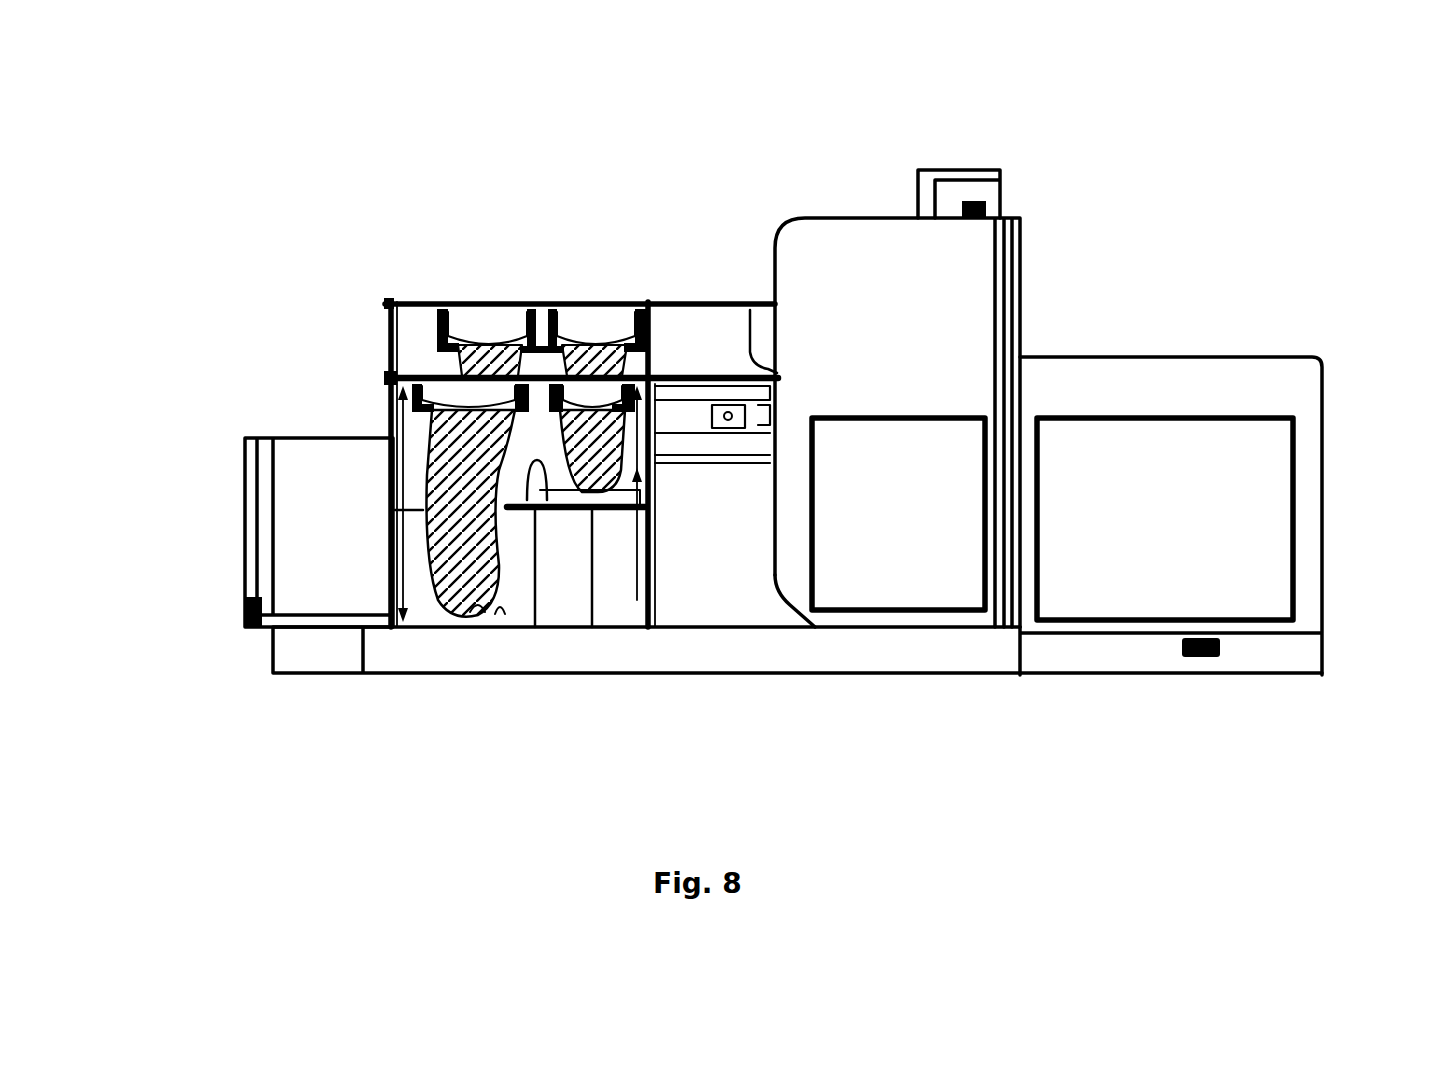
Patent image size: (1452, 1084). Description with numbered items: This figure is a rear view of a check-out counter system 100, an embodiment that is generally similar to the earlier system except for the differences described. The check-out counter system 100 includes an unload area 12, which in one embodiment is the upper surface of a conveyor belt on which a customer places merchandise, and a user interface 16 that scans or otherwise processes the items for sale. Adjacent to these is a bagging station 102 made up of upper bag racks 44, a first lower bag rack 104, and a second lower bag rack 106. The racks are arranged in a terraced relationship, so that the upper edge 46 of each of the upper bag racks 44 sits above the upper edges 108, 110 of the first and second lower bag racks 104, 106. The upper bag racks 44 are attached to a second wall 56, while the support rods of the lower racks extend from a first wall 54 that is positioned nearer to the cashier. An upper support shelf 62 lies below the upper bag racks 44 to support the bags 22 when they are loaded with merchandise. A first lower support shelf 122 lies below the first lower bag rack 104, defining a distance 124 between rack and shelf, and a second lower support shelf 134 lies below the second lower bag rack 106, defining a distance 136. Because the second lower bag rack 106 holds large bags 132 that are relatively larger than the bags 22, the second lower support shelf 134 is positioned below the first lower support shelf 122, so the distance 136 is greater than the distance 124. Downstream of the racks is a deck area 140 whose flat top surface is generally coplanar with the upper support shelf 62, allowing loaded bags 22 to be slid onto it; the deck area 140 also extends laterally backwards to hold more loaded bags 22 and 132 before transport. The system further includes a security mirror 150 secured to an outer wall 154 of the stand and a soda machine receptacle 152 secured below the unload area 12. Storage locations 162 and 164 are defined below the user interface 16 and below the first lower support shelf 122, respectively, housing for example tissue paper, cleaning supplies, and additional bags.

The check-out counter system 100 is at (1150, 185).
The unload area 12 is at (1259, 354).
The user interface 16 is at (710, 370).
The bags 22 is at (614, 480).
The upper bag racks 44 is at (447, 330).
The upper edge 46 is at (522, 318).
The first wall 54 is at (423, 433).
The second wall 56 is at (417, 308).
The upper support shelf 62 is at (842, 252).
The bagging station 102 is at (560, 285).
The first lower bag rack 104 is at (653, 463).
The second lower bag rack 106 is at (392, 386).
The upper edge 108 is at (566, 345).
The upper edge 110 is at (405, 335).
The first lower support shelf 122 is at (533, 480).
The distance 124 is at (648, 455).
The large bags 132 is at (488, 620).
The second lower support shelf 134 is at (500, 615).
The distance 136 is at (393, 407).
The deck area 140 is at (267, 437).
The security mirror 150 is at (945, 578).
The soda machine receptacle 152 is at (1258, 540).
The outer wall 154 is at (943, 350).
The storage location 162 is at (775, 608).
The storage location 164 is at (610, 606).